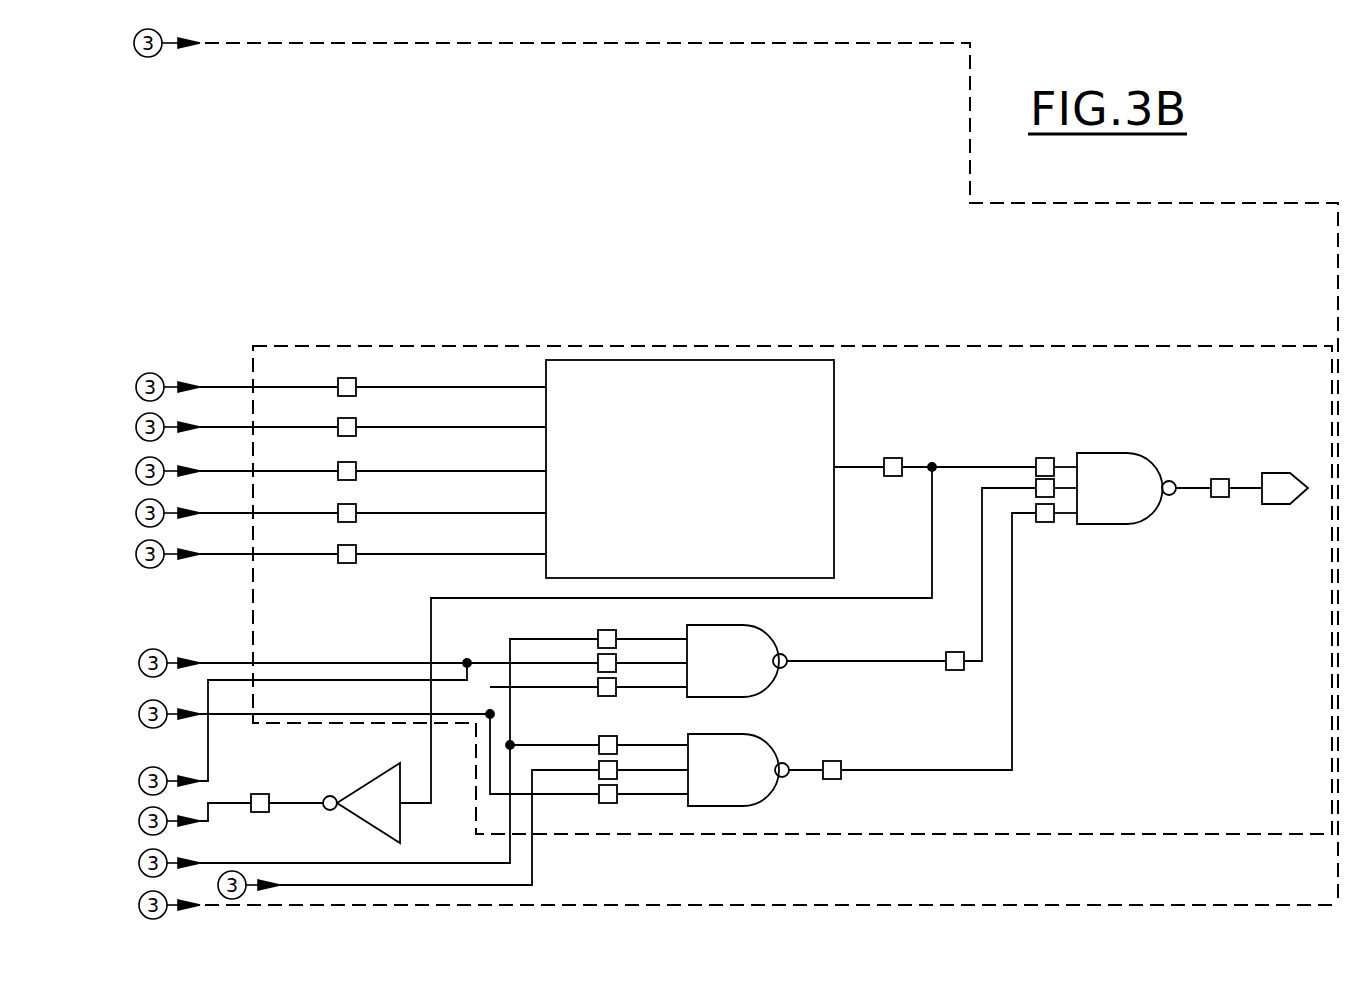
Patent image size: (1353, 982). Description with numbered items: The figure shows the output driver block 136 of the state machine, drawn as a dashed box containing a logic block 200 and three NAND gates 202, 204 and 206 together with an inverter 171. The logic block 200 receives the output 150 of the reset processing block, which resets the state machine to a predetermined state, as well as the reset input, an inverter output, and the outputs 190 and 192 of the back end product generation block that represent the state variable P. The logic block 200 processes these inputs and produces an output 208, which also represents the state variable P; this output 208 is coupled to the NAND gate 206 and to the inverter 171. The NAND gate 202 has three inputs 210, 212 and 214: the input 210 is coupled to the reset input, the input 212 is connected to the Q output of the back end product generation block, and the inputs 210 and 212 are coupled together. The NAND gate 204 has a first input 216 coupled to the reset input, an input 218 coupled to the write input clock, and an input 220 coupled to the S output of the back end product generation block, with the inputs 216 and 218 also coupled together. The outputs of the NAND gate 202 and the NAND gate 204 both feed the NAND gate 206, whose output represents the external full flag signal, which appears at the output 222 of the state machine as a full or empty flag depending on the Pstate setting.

The output driver block 136 is at (707, 837).
The output of the reset processing block 150 is at (498, 386).
The output of the back end product generation block 190 is at (415, 512).
The output of the back end product generation block 192 is at (449, 556).
The logic block 200 is at (668, 360).
The output of the logic block 208 is at (856, 466).
The third NAND gate 206 is at (1122, 432).
The output of the state machine 222 is at (1196, 484).
The first NAND gate 202 is at (773, 632).
The second NAND gate 204 is at (775, 742).
The input of the NAND gate 210 is at (580, 636).
The input of the NAND gate 212 is at (549, 660).
The input of the NAND gate 214 is at (584, 686).
The first input of the NAND gate 216 is at (665, 743).
The input of the NAND gate 218 is at (643, 768).
The input of the NAND gate 220 is at (570, 797).
The inverter 171 is at (374, 778).